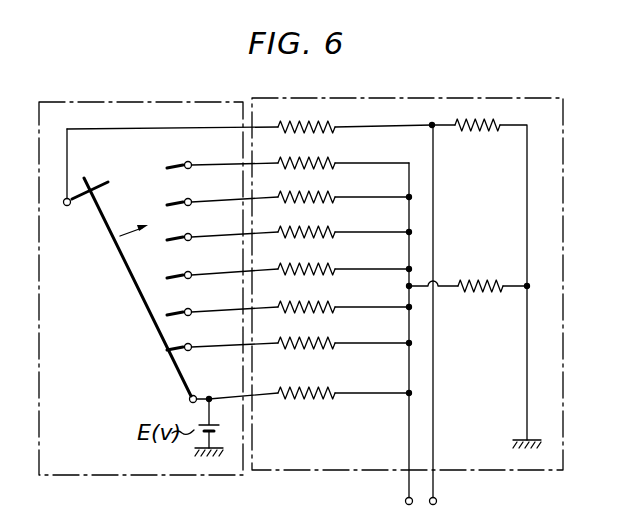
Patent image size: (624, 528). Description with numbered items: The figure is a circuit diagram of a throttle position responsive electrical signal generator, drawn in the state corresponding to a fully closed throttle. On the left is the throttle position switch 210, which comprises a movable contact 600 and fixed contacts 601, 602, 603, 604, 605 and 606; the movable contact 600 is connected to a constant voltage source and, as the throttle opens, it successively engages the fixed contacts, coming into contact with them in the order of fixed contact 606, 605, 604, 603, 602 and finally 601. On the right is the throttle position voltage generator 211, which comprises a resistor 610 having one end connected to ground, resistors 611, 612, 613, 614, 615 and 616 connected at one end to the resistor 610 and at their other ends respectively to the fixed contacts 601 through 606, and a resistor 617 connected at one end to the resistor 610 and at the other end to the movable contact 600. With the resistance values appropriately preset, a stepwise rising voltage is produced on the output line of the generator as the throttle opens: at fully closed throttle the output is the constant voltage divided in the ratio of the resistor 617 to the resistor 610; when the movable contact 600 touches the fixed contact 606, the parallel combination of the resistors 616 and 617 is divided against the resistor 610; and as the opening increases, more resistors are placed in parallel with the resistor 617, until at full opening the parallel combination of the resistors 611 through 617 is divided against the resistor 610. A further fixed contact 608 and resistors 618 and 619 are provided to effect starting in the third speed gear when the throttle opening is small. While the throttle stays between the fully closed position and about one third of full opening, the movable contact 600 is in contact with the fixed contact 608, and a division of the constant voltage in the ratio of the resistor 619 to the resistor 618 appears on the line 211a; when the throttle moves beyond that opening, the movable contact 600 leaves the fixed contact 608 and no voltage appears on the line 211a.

The throttle position switch 210 is at (167, 96).
The throttle position voltage generator 211 is at (433, 94).
The line 211a is at (436, 484).
The movable contact 600 is at (135, 283).
The fixed contact 601 is at (185, 163).
The fixed contact 602 is at (185, 200).
The fixed contact 603 is at (185, 235).
The fixed contact 604 is at (185, 273).
The fixed contact 605 is at (185, 310).
The fixed contact 606 is at (185, 345).
The fixed contact 608 is at (86, 178).
The resistor 610 is at (458, 297).
The resistor 611 is at (318, 166).
The resistor 612 is at (320, 200).
The resistor 613 is at (320, 235).
The resistor 614 is at (320, 272).
The resistor 615 is at (320, 310).
The resistor 616 is at (320, 346).
The resistor 617 is at (320, 396).
The resistor 618 is at (455, 132).
The resistor 619 is at (318, 130).